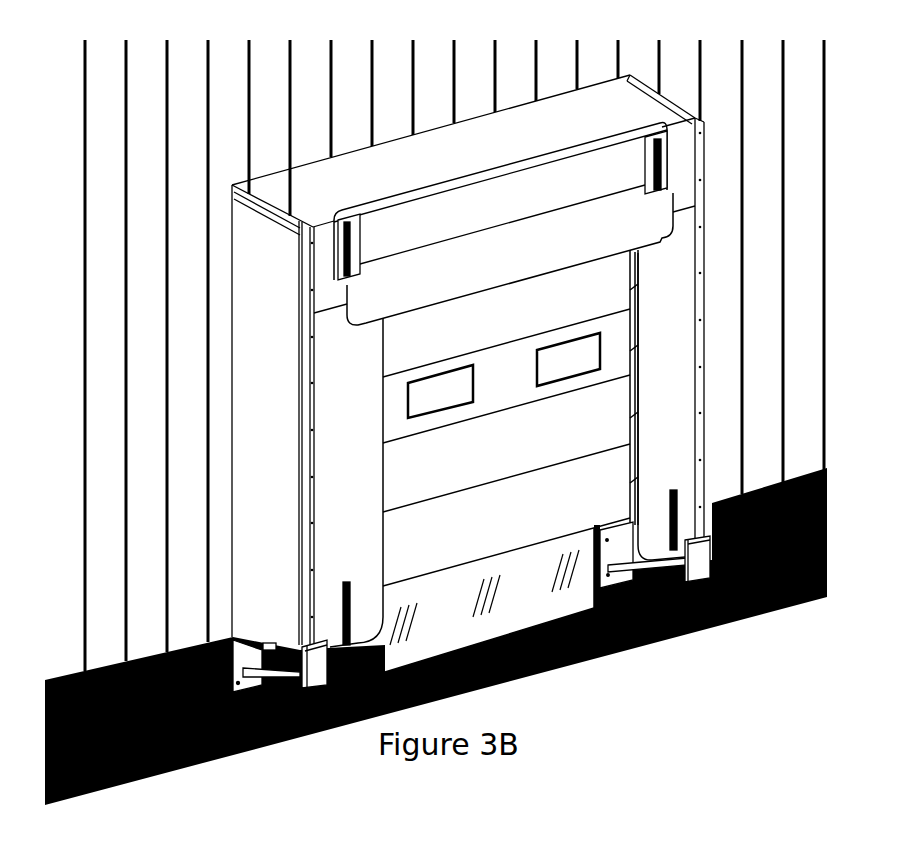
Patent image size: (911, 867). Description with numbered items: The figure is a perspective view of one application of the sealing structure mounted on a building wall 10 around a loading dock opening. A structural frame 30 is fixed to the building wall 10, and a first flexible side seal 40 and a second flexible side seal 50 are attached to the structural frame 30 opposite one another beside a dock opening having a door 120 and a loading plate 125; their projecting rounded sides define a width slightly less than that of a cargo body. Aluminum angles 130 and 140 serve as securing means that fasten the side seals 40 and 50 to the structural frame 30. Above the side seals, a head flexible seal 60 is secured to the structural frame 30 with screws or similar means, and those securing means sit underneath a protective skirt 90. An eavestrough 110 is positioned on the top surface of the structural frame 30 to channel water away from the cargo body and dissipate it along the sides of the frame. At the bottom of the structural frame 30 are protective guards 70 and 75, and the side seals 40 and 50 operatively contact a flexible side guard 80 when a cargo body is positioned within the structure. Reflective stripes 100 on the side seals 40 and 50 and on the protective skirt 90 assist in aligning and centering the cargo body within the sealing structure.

The building wall 10 is at (148, 125).
The eavestrough 110 is at (445, 187).
The structural frame 30 is at (320, 167).
The aluminum angle 140 is at (310, 408).
The aluminum angle 130 is at (700, 295).
The protective skirt 90 is at (463, 217).
The head flexible seal 60 is at (535, 247).
The reflective stripes 100 is at (345, 249).
The second flexible side seal 50 is at (345, 454).
The first flexible side seal 40 is at (663, 381).
The door 120 is at (508, 505).
The loading plate 125 is at (512, 592).
The protective guard 75 is at (316, 670).
The flexible side guard 80 is at (622, 540).
The protective guard 70 is at (702, 557).